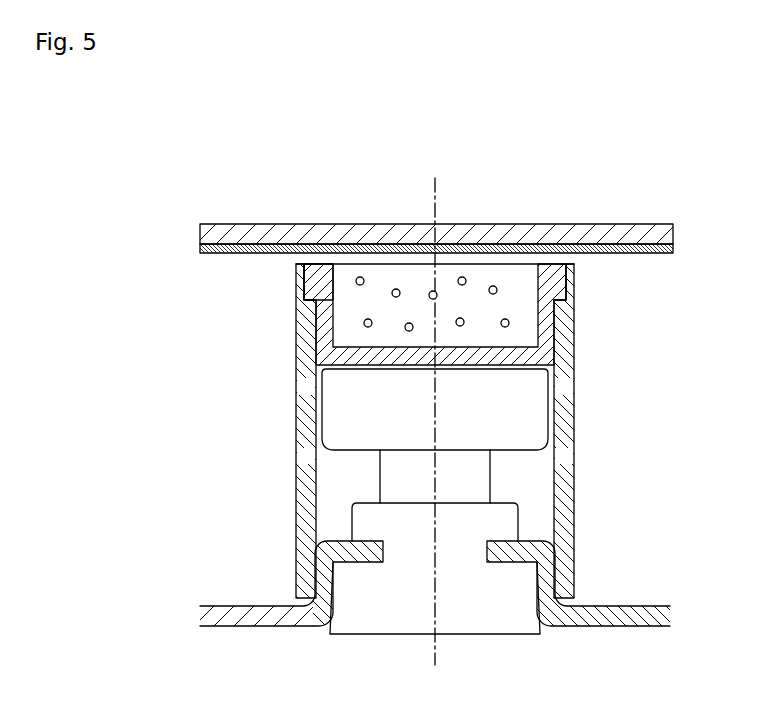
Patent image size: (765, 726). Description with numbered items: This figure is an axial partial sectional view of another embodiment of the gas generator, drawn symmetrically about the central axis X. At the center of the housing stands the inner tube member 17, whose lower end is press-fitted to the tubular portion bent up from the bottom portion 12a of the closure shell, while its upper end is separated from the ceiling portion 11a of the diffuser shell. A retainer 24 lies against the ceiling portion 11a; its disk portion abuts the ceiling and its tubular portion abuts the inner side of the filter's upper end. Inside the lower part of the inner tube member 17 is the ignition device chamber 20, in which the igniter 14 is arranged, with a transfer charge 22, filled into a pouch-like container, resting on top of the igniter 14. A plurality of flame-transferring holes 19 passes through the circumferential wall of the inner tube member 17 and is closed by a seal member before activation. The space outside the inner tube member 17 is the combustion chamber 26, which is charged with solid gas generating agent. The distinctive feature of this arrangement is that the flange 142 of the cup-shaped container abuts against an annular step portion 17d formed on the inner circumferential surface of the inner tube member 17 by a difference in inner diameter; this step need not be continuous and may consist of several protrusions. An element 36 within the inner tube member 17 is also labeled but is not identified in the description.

The ceiling portion 11a is at (487, 232).
The retainer 24 is at (233, 254).
The flange 142 is at (312, 273).
The inner tube member 17 is at (570, 355).
The annular step portion 17d is at (568, 290).
The perforated insert 36 is at (363, 326).
The transfer charge 22 is at (385, 422).
The ignition device chamber 20 is at (534, 493).
The flame-transferring holes 19 is at (300, 456).
The combustion chamber 26 is at (645, 456).
The igniter 14 is at (382, 617).
The bottom portion 12a is at (612, 620).
The axis X is at (434, 409).